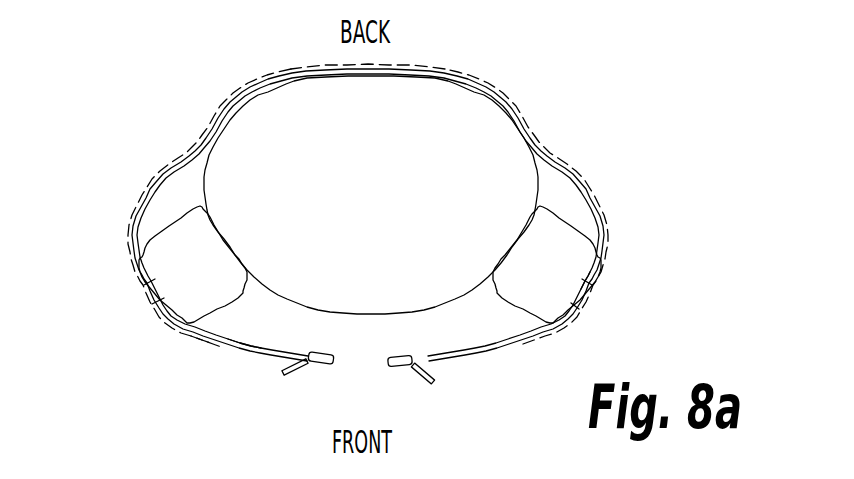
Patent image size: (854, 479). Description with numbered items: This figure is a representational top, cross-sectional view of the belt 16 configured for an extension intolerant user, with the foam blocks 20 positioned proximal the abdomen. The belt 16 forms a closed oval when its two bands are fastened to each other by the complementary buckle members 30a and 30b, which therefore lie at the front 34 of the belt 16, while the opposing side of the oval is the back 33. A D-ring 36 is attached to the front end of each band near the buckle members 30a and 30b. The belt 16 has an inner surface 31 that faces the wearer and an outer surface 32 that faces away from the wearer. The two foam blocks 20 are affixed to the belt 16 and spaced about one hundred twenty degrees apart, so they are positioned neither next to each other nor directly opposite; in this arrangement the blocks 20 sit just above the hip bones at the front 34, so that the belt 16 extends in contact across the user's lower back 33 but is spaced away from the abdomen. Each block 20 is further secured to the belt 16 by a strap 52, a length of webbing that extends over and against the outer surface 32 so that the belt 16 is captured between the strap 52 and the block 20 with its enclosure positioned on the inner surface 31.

The belt 16 is at (140, 162).
The foam blocks 20 is at (162, 275).
The buckle member 30a is at (397, 368).
The buckle member 30b is at (320, 366).
The inner surface 31 is at (243, 333).
The outer surface 32 is at (217, 340).
The back 33 is at (317, 63).
The front 34 is at (343, 407).
The D-ring 36 is at (288, 408).
The strap 52 is at (586, 292).